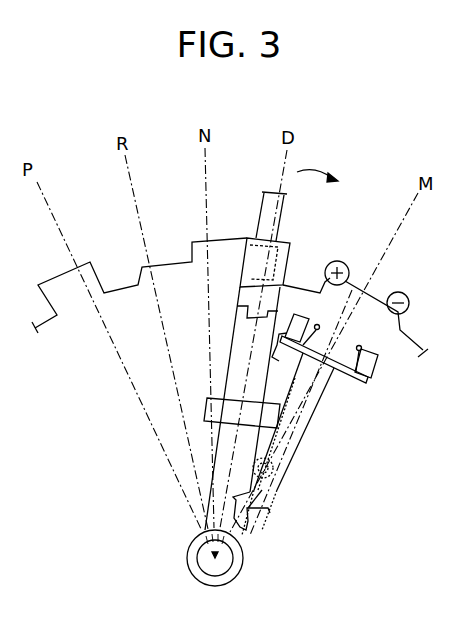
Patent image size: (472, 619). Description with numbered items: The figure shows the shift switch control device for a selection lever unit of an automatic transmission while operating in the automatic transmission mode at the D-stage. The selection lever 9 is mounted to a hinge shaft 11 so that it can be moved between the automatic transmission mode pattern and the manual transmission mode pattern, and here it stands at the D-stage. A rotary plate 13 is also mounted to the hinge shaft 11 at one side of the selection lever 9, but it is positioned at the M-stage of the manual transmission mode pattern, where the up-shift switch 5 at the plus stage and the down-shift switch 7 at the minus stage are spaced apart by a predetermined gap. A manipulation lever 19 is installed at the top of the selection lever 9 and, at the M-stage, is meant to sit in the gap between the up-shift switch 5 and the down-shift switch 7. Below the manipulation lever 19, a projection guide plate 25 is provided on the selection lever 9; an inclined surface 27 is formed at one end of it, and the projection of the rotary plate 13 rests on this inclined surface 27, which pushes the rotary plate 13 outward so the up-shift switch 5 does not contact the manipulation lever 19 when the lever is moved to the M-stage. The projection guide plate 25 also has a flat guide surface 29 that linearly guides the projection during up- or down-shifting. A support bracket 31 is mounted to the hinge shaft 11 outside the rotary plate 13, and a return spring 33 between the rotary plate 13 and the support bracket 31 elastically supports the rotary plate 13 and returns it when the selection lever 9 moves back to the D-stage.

The up-shift switch 5 is at (303, 312).
The down-shift switch 7 is at (386, 380).
The selection lever 9 is at (282, 212).
The hinge shaft 11 is at (227, 568).
The rotary plate 13 is at (323, 390).
The manipulation lever 19 is at (225, 269).
The projection guide plate 25 is at (229, 408).
The inclined surface 27 is at (272, 413).
The flat guide surface 29 is at (207, 400).
The support bracket 31 is at (245, 535).
The return spring 33 is at (270, 473).